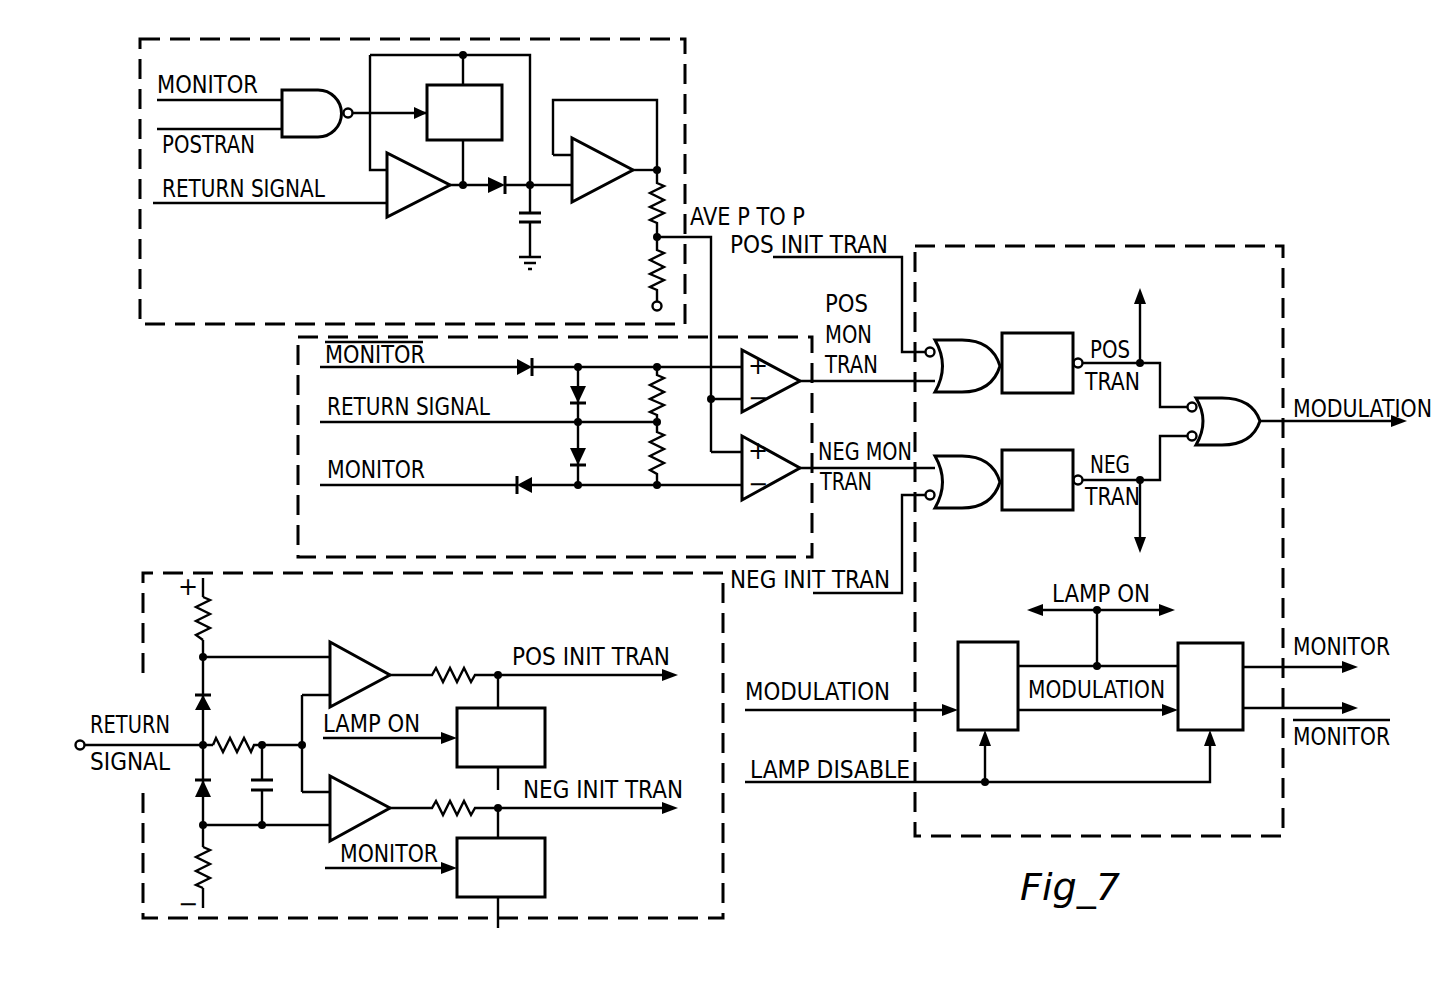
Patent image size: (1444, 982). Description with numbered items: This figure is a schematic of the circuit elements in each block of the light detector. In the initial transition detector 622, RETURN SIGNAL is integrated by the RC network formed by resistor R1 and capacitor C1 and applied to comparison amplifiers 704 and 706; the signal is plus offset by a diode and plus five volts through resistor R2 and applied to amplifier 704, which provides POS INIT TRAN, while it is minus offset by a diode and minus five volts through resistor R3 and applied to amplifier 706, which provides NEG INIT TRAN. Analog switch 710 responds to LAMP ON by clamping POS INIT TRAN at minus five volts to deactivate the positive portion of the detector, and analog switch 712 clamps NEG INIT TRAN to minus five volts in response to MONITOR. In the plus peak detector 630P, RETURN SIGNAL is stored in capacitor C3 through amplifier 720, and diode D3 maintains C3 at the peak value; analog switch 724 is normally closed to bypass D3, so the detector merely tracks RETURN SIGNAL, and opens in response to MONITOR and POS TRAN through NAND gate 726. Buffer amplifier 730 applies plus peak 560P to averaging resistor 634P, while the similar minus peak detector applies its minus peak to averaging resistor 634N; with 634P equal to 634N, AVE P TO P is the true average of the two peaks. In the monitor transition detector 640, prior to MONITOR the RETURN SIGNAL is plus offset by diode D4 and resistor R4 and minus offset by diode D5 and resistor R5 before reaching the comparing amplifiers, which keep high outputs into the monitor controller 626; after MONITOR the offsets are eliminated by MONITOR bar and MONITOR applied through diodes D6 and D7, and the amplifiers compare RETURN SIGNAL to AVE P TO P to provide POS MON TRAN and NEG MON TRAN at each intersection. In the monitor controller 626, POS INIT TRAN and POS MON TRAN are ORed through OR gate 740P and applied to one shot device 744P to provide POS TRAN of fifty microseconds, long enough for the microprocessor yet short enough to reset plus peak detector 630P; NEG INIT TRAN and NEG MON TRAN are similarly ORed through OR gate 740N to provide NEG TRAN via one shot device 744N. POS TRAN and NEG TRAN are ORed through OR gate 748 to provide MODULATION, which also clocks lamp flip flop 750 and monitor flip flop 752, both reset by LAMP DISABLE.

The plus peak detector 630P is at (412, 181).
The NAND gate 726 is at (321, 126).
The analog switch 724 is at (480, 125).
The amplifier 720 is at (440, 198).
The diode D3 is at (500, 197).
The capacitor C3 is at (552, 214).
The buffer amplifier 730 is at (622, 136).
The plus peak 560P is at (659, 168).
The averaging resistor 634P is at (652, 222).
The averaging resistor 634N is at (652, 275).
The monitor transition detector 640 is at (555, 447).
The diode D6 is at (535, 347).
The diode D7 is at (538, 498).
The diode D4 is at (586, 403).
The diode D5 is at (586, 473).
The resistor R4 is at (671, 394).
The resistor R5 is at (671, 453).
The monitor controller 626 is at (1099, 541).
The OR gate 740P is at (968, 377).
The one shot device 744P is at (1050, 376).
The OR gate 740N is at (968, 492).
The one shot device 744N is at (1050, 492).
The OR gate 748 is at (1232, 434).
The lamp flip flop 750 is at (1003, 701).
The monitor flip flop 752 is at (1222, 701).
The initial transition detector 622 is at (433, 745).
The resistor R1 is at (228, 730).
The resistor R2 is at (220, 635).
The resistor R3 is at (207, 855).
The capacitor C1 is at (273, 787).
The comparison amplifier 704 is at (376, 648).
The comparison amplifier 706 is at (374, 783).
The analog switch 710 is at (508, 749).
The analog switch 712 is at (510, 879).